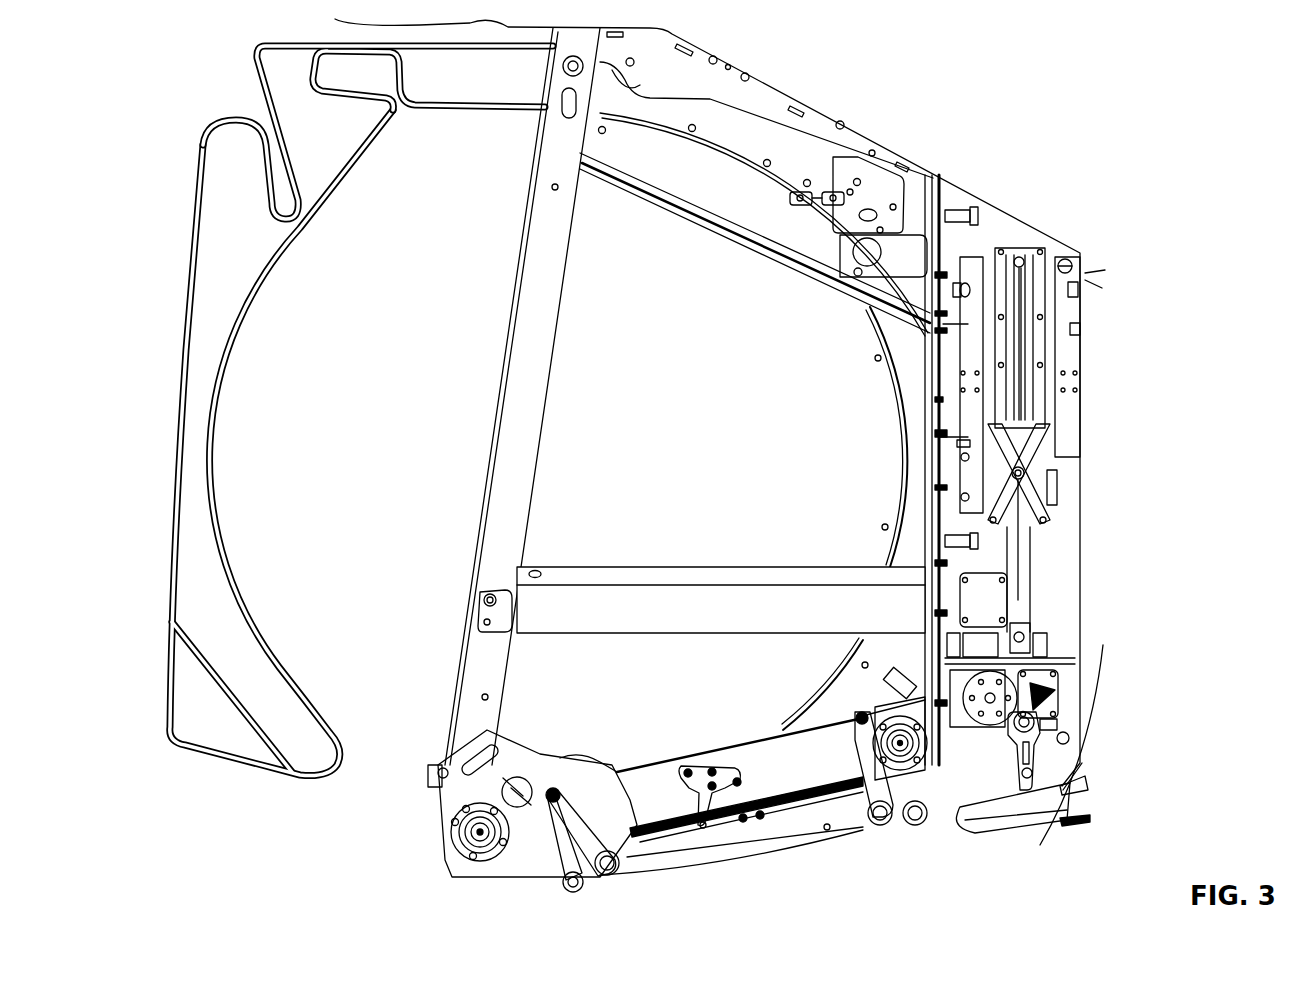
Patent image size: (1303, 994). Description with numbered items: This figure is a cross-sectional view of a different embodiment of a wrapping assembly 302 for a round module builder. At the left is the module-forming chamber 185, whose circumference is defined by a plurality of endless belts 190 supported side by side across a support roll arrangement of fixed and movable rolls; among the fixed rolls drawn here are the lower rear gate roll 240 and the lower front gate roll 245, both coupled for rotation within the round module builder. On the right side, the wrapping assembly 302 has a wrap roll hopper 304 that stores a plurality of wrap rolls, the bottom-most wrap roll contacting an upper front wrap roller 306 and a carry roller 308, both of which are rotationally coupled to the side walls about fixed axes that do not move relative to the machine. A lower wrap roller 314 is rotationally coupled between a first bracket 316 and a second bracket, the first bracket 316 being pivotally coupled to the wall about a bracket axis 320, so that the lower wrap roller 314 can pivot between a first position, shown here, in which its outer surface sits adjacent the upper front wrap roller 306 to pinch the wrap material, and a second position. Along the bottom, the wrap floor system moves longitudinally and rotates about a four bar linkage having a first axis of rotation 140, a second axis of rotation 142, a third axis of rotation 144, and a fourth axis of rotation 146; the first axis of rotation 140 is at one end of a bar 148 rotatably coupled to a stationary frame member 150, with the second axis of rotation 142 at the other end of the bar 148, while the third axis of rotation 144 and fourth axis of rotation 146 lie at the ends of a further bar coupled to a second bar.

The wrapping assembly 302 is at (1052, 144).
The wrap roll hopper 304 is at (1054, 558).
The upper front wrap roller 306 is at (997, 697).
The carry roller 308 is at (1037, 697).
The lower wrap roller 314 is at (1043, 722).
The first bracket 316 is at (1037, 827).
The bracket axis 320 is at (1075, 758).
The module-forming chamber 185 is at (293, 423).
The endless belts 190 is at (172, 550).
The stationary frame member 150 is at (542, 770).
The lower front gate roll 245 is at (456, 832).
The first axis of rotation 140 is at (470, 868).
The bar 148 is at (533, 868).
The second axis of rotation 142 is at (573, 893).
The third axis of rotation 144 is at (858, 716).
The fourth axis of rotation 146 is at (900, 745).
The lower rear gate roll 240 is at (933, 815).